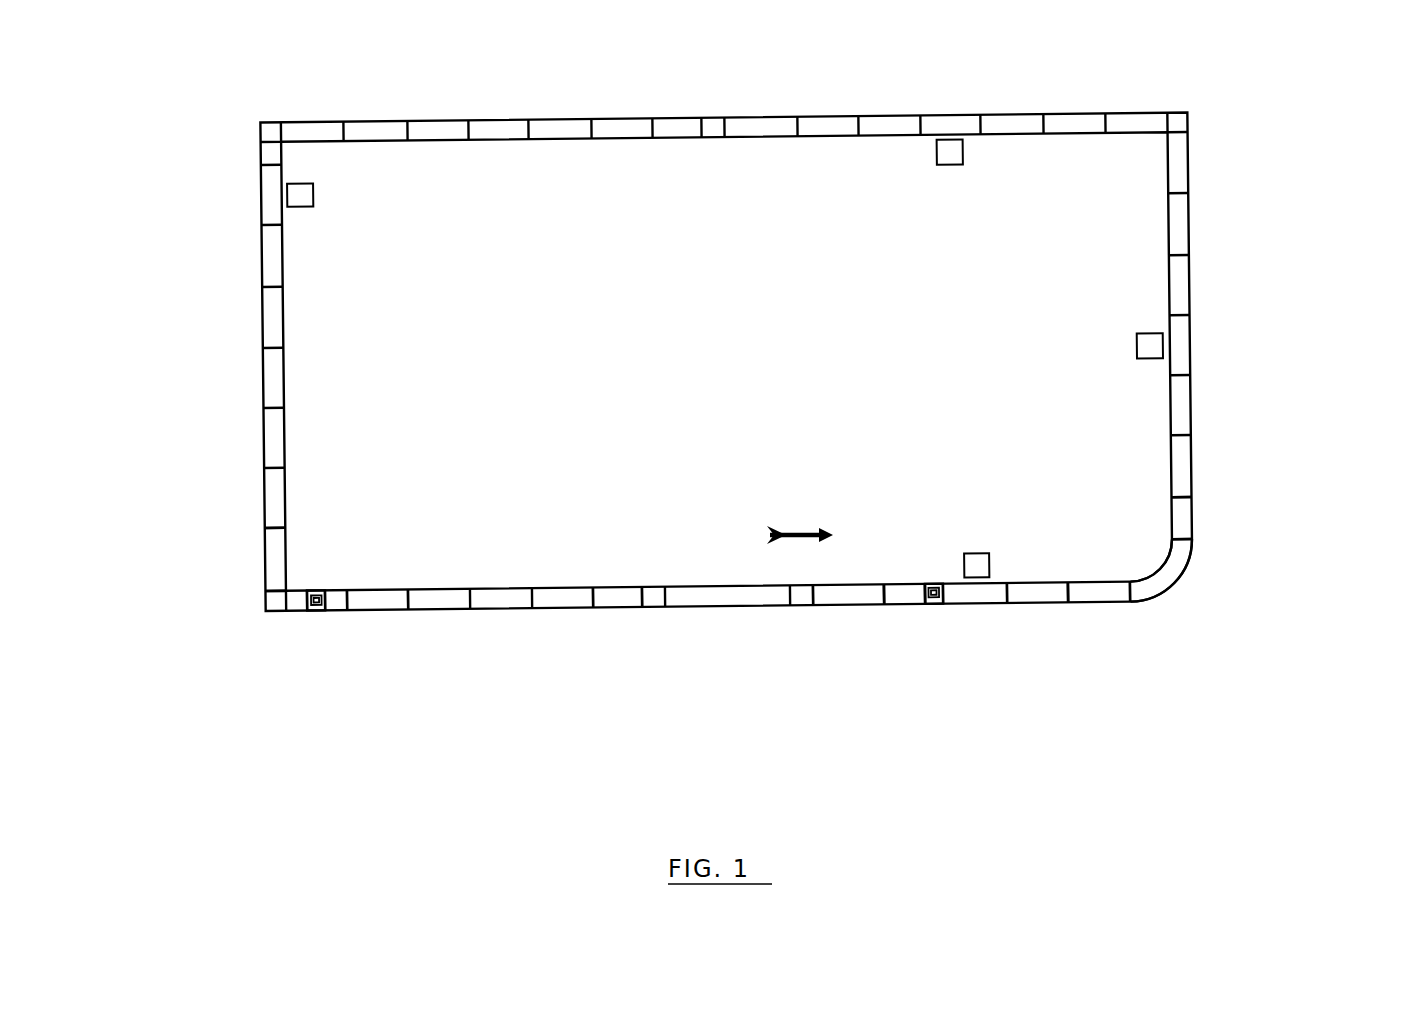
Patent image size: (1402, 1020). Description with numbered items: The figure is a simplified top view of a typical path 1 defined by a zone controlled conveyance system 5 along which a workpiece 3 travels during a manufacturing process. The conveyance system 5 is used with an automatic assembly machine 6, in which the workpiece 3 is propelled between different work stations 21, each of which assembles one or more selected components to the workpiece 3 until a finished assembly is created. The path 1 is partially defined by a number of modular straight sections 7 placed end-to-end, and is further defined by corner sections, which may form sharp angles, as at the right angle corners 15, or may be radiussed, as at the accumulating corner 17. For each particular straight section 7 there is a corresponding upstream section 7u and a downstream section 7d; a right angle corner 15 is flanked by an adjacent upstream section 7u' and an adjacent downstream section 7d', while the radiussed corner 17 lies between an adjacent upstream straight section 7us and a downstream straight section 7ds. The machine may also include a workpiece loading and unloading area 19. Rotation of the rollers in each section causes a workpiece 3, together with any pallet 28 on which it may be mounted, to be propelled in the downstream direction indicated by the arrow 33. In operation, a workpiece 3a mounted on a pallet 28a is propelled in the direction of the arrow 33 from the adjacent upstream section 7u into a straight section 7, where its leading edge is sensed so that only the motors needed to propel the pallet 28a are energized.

The path 1 is at (442, 657).
The workpiece 3 is at (318, 590).
The workpiece 3a is at (933, 604).
The zone controlled conveyance system 5 is at (607, 585).
The automatic assembly machine 6 is at (840, 607).
The modular straight section 7 is at (262, 439).
The upstream section 7u is at (905, 662).
The downstream section 7d is at (1054, 680).
The upstream section 7u' is at (164, 559).
The downstream section 7d' is at (382, 668).
The upstream straight section 7us is at (1100, 607).
The downstream straight section 7ds is at (1193, 523).
The right angle corner 15 is at (260, 132).
The radiussed corner 17 is at (1160, 605).
The workpiece loading and unloading area 19 is at (812, 657).
The work station 21 is at (300, 194).
The pallet 28 is at (315, 611).
The pallet 28a is at (932, 596).
The downstream direction 33 is at (797, 525).